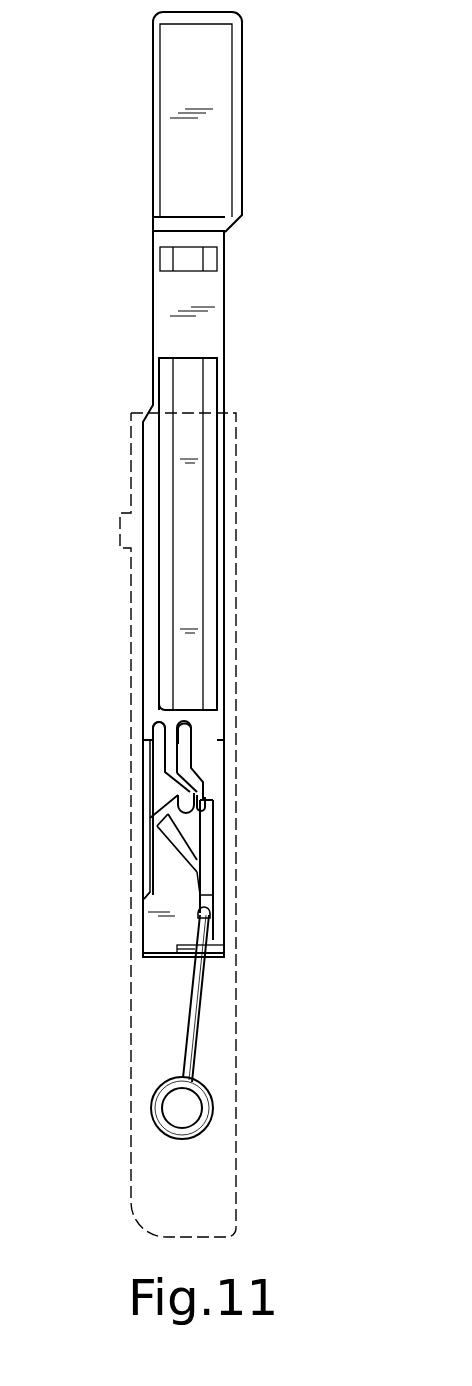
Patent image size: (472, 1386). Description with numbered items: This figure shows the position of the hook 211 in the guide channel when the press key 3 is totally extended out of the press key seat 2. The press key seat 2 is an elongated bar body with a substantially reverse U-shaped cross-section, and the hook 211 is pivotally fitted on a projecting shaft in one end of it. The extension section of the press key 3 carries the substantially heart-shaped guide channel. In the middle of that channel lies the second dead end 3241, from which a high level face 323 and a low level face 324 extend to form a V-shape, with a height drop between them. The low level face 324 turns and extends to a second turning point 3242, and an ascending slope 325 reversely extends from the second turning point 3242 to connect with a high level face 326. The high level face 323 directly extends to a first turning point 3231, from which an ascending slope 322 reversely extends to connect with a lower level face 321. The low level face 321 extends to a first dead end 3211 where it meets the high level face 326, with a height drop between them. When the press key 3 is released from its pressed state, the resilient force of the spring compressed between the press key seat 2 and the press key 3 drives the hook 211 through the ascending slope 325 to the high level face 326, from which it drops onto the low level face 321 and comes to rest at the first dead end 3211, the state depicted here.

The press key seat 2 is at (122, 435).
The press key 3 is at (180, 155).
The hook 211 is at (195, 1022).
The low level face 321 is at (208, 903).
The first dead end 3211 is at (213, 930).
The ascending slope 322 is at (207, 858).
The high level face 323 is at (192, 779).
The first turning point 3231 is at (192, 737).
The low level face 324 is at (163, 785).
The second dead end 3241 is at (194, 808).
The second turning point 3242 is at (160, 738).
The ascending slope 325 is at (170, 853).
The high level face 326 is at (188, 884).